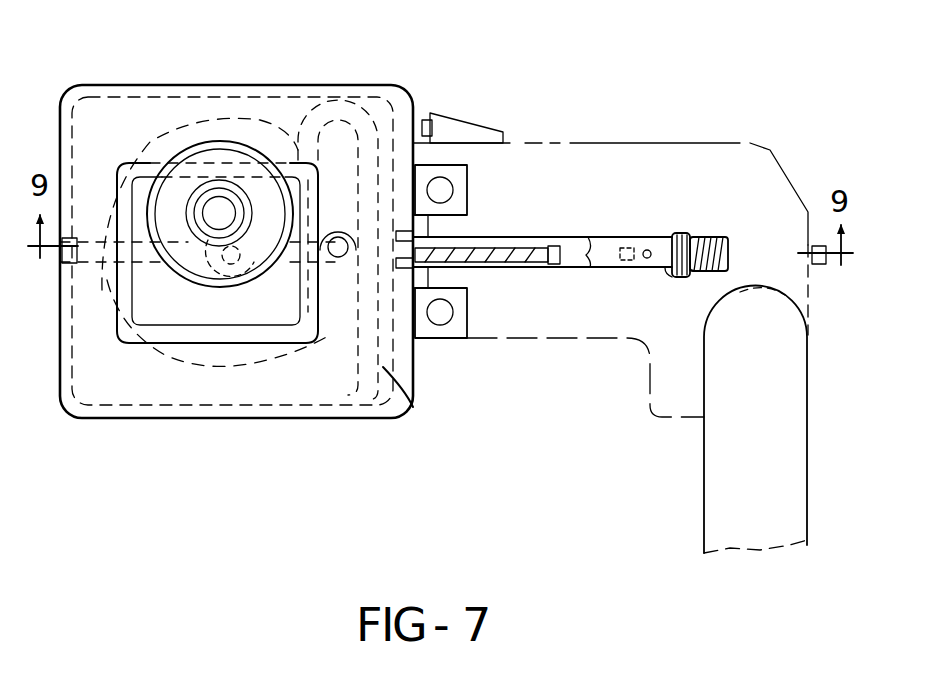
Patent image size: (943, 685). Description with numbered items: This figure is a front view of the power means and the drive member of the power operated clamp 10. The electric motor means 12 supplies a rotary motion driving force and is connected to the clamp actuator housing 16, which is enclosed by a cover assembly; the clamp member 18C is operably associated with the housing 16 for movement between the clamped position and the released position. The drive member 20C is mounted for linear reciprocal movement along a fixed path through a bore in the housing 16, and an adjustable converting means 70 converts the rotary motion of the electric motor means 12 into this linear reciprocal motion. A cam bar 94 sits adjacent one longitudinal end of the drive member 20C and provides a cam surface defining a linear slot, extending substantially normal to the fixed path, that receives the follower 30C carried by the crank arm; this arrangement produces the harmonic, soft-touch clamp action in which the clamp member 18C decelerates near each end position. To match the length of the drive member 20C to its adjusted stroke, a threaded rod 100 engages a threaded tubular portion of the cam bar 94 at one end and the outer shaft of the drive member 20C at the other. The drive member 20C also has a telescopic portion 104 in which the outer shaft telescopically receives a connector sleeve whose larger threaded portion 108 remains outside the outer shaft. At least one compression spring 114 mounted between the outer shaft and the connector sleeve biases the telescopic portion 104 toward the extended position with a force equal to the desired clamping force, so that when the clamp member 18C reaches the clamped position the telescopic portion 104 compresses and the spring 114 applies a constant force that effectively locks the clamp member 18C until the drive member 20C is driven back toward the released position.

The power operated clamp 10 is at (483, 30).
The electric motor means 12 is at (217, 345).
The clamp actuator housing 16 is at (330, 41).
The clamp member 18C is at (705, 456).
The drive member 20C is at (540, 231).
The follower 30C is at (347, 290).
The adjustable converting means 70 is at (673, 226).
The cam bar 94 is at (413, 407).
The threaded rod 100 is at (482, 243).
The telescopic portion 104 is at (666, 288).
The threaded portion 108 is at (693, 268).
The compression spring 114 is at (684, 227).